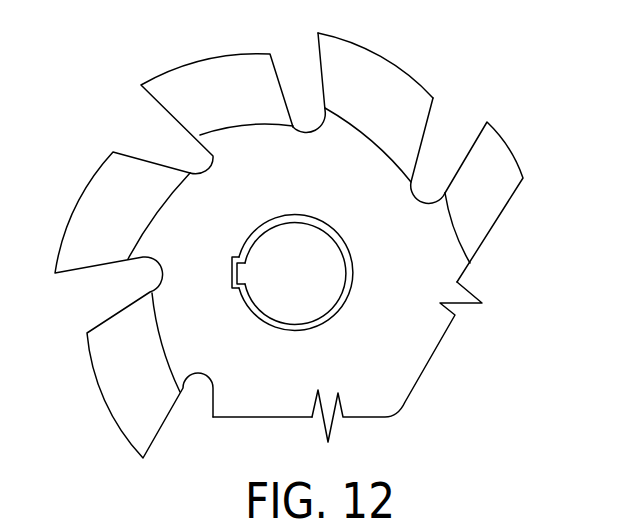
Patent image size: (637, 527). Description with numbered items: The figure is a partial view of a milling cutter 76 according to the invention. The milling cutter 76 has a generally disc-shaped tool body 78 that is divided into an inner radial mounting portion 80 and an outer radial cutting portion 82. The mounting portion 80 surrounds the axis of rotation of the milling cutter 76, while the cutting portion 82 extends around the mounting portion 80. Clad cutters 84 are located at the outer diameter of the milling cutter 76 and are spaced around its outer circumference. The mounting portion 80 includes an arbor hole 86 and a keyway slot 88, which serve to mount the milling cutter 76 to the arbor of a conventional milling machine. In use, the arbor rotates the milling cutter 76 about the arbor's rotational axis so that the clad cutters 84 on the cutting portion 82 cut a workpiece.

The milling cutter 76 is at (505, 131).
The tool body 78 is at (377, 324).
The inner radial mounting portion 80 is at (282, 357).
The outer radial cutting portion 82 is at (378, 103).
The clad cutters 84 is at (223, 57).
The arbor hole 86 is at (333, 313).
The keyway slot 88 is at (242, 291).